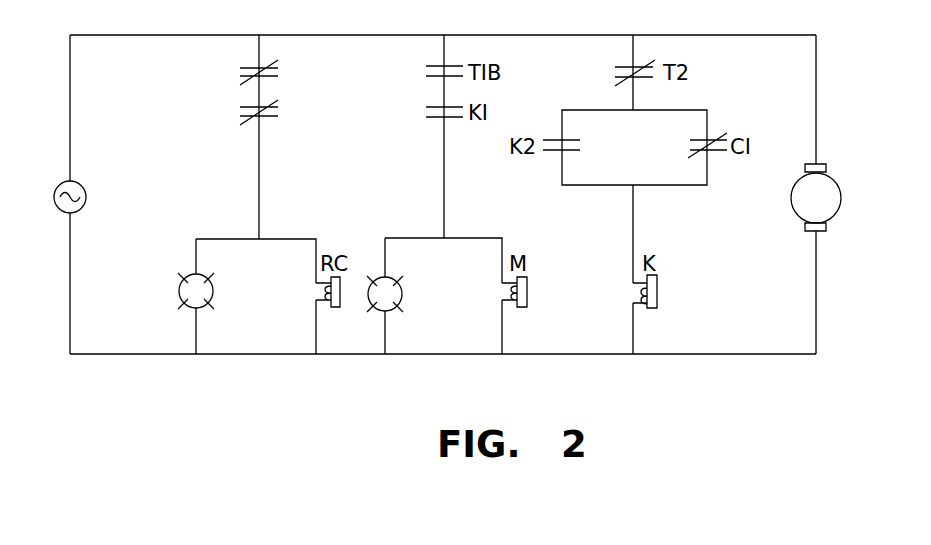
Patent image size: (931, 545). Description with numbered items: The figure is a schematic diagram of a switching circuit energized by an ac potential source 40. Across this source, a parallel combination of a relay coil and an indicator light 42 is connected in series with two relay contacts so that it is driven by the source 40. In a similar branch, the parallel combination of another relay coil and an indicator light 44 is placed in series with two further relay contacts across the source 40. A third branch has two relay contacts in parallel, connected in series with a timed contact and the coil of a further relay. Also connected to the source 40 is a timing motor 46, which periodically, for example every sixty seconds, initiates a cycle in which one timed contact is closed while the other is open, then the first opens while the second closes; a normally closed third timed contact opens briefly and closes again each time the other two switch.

The ac potential source 40 is at (86, 194).
The indicator light 42 is at (214, 290).
The indicator light 44 is at (403, 292).
The timing motor 46 is at (791, 200).